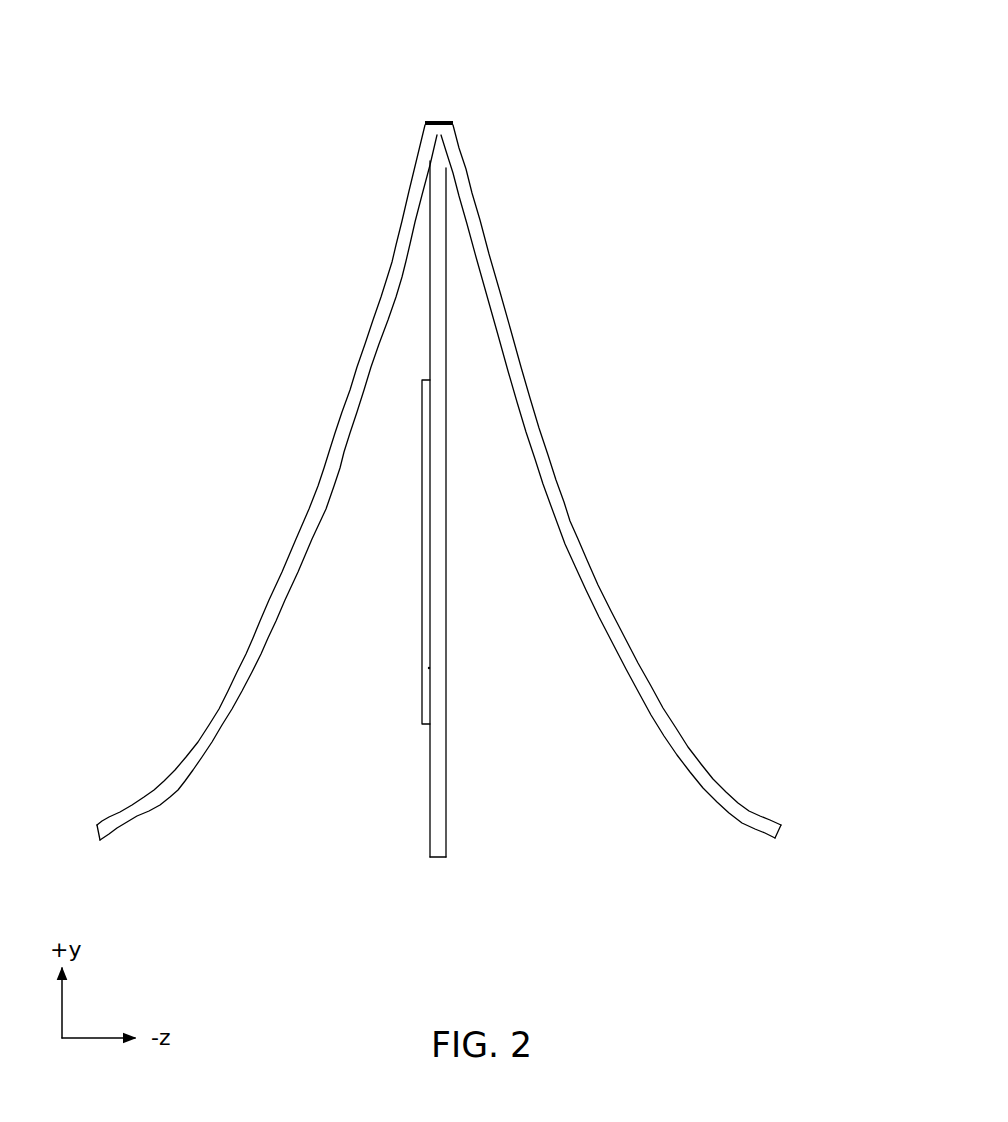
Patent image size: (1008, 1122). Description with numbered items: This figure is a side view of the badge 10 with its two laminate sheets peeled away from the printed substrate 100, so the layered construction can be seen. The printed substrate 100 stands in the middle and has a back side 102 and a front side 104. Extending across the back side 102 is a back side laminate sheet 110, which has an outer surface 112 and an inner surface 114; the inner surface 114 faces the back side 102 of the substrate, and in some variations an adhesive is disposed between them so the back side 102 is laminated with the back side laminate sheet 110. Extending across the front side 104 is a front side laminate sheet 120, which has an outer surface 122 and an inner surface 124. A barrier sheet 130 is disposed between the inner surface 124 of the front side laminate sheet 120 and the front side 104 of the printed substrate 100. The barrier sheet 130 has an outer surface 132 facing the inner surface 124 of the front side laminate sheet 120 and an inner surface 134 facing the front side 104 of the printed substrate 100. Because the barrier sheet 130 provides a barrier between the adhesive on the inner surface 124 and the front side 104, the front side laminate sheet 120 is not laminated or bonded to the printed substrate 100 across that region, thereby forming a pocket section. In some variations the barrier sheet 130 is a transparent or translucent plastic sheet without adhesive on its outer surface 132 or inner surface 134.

The badge 10 is at (496, 88).
The printed substrate 100 is at (445, 862).
The back side 102 is at (448, 533).
The front side 104 is at (430, 818).
The back side laminate sheet 110 is at (670, 709).
The outer surface 112 is at (518, 362).
The inner surface 114 is at (637, 700).
The front side laminate sheet 120 is at (240, 661).
The outer surface 122 is at (357, 366).
The inner surface 124 is at (400, 293).
The barrier sheet 130 is at (418, 708).
The outer surface 132 is at (422, 606).
The inner surface 134 is at (428, 668).